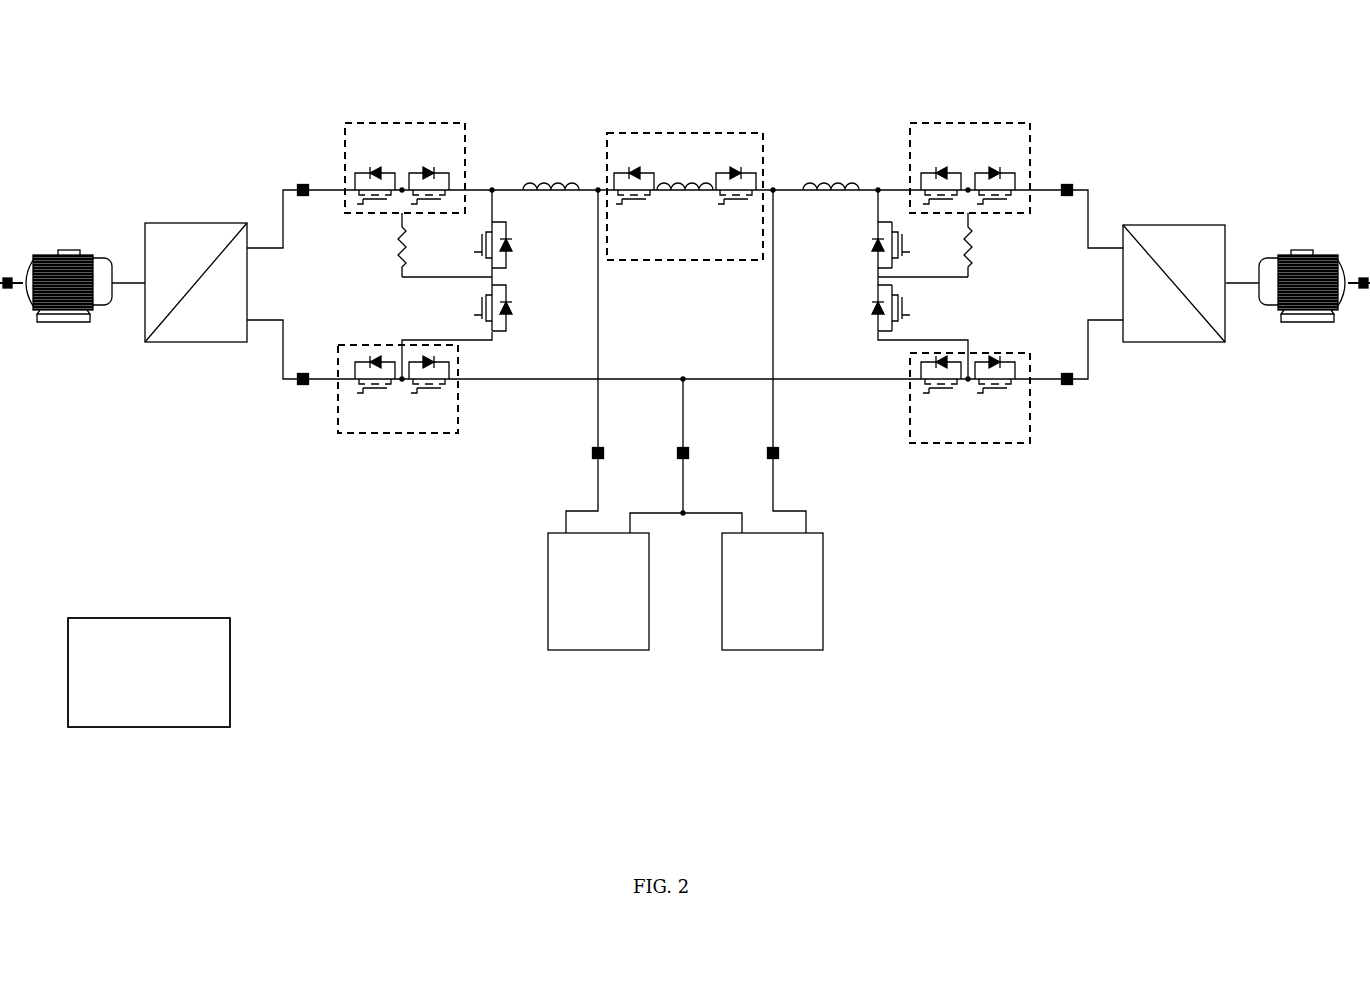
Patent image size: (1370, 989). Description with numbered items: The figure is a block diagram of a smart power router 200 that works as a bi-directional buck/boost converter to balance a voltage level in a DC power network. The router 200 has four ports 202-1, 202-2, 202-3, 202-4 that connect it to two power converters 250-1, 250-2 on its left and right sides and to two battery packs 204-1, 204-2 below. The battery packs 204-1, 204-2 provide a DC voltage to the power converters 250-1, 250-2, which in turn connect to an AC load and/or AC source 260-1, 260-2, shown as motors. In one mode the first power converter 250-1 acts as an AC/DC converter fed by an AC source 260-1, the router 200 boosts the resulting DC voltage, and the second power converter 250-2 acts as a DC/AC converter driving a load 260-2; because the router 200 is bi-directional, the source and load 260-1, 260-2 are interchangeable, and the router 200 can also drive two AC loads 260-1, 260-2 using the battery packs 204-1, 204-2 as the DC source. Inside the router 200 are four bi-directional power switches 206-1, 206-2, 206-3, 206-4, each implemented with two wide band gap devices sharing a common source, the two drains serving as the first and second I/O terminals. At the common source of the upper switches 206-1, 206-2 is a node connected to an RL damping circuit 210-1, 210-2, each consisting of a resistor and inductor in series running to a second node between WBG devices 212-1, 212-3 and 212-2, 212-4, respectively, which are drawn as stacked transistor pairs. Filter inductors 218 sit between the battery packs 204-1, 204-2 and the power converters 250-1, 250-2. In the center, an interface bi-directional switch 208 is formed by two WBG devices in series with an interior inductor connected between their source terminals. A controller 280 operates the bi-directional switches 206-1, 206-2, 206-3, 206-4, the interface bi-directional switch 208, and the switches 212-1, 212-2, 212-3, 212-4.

The smart power router 200 is at (301, 104).
The port 202-1 is at (293, 185).
The port 202-2 is at (1082, 181).
The port 202-3 is at (590, 465).
The port 202-4 is at (780, 467).
The battery pack 204-1 is at (600, 655).
The battery pack 204-2 is at (770, 655).
The bi-directional power switch 206-1 is at (405, 122).
The bi-directional power switch 206-2 is at (975, 122).
The bi-directional power switch 206-3 is at (400, 433).
The bi-directional power switch 206-4 is at (969, 443).
The interface bi-directional switch 208 is at (685, 262).
The RL damping circuit 210-1 is at (358, 252).
The RL damping circuit 210-2 is at (980, 260).
The WBG device 212-1 is at (508, 270).
The WBG device 212-2 is at (864, 270).
The WBG device 212-3 is at (508, 322).
The WBG device 212-4 is at (866, 320).
The filter inductor 218 is at (570, 137).
The power converter 250-1 is at (205, 223).
The power converter 250-2 is at (1175, 223).
The AC source 260-1 is at (70, 250).
The AC load 260-2 is at (1300, 248).
The controller 280 is at (149, 672).